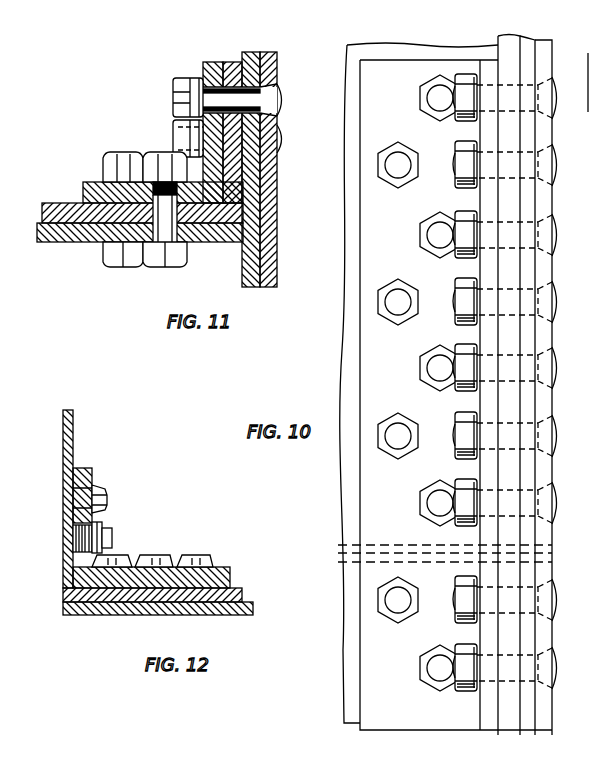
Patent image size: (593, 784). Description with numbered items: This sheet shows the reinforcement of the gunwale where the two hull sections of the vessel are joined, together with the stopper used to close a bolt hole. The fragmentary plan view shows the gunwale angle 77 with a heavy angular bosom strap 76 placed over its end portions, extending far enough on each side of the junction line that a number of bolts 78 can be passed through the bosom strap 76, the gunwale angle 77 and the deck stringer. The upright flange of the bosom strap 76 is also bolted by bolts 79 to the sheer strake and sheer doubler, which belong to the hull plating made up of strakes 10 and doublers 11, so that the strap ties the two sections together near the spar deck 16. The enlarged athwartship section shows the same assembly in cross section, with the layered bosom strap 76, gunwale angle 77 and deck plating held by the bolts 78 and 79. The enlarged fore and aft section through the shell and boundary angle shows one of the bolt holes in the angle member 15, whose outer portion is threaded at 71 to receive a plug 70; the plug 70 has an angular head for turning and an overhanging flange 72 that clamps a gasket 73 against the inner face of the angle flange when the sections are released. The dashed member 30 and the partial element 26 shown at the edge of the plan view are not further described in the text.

In FIG. 11, the strakes 10 is at (277, 62).
In FIG. 12, the strakes 10 is at (253, 615).
In FIG. 10, the strakes 10 is at (548, 205).
In FIG. 11, the doublers 11 is at (251, 52).
In FIG. 12, the doublers 11 is at (242, 594).
In FIG. 10, the doublers 11 is at (527, 328).
In FIG. 12, the angle members 15 is at (92, 472).
In FIG. 11, the spar deck 16 is at (50, 239).
In FIG. 10, the member 26 is at (584, 70).
In FIG. 12, the bar 30 is at (73, 433).
In FIG. 10, the bar 30 is at (383, 560).
In FIG. 12, the plugs 70 is at (110, 530).
In FIG. 12, the threaded outer portion of bolt hole 71 is at (75, 535).
In FIG. 12, the overhanging flanges 72 is at (108, 547).
In FIG. 12, the gaskets 73 is at (87, 557).
In FIG. 11, the bosom strap 76 is at (203, 67).
In FIG. 10, the bosom strap 76 is at (490, 278).
In FIG. 11, the gunwale angle 77 is at (233, 62).
In FIG. 10, the gunwale angle 77 is at (507, 570).
In FIG. 11, the bolts 78 is at (160, 267).
In FIG. 10, the bolts 78 is at (395, 292).
In FIG. 11, the bolts 79 is at (278, 137).
In FIG. 10, the bolts 79 is at (455, 488).